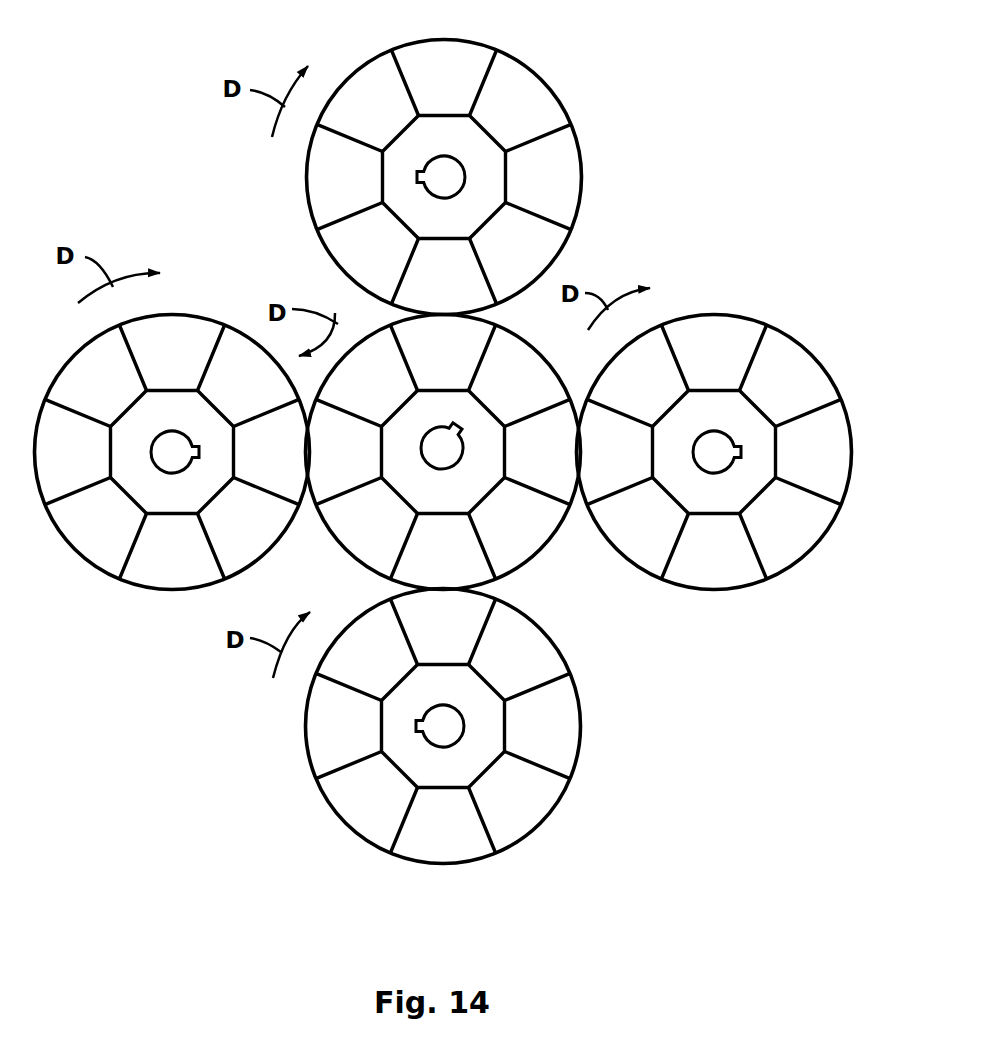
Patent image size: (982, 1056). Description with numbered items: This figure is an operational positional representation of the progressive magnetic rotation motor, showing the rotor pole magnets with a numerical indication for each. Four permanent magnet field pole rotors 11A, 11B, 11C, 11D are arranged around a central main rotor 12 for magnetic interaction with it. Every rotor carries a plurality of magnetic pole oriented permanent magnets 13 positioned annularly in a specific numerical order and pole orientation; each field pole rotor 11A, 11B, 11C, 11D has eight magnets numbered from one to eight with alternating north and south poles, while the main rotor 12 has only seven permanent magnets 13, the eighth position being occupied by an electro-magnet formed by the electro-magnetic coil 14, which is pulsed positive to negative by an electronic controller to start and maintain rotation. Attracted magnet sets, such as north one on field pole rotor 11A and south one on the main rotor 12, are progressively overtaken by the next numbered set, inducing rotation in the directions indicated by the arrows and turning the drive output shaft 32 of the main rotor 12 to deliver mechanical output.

The permanent magnet field pole rotor 11A is at (172, 472).
The permanent magnet field pole rotor 11B is at (471, 177).
The permanent magnet field pole rotor 11C is at (714, 476).
The permanent magnet field pole rotor 11D is at (399, 726).
The main rotor 12 is at (448, 453).
The permanent magnets 13 is at (443, 452).
The electro-magnetic coil 14 is at (348, 539).
The drive output shaft 32 is at (442, 437).